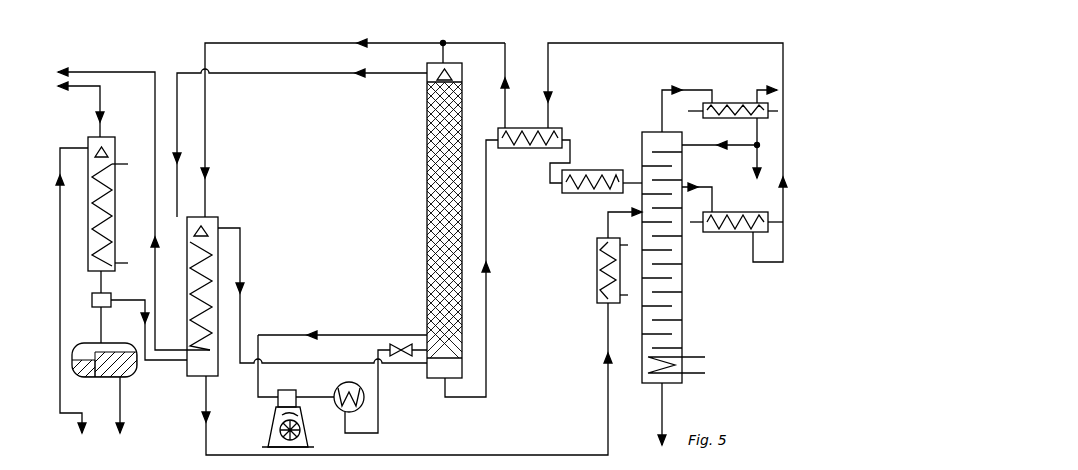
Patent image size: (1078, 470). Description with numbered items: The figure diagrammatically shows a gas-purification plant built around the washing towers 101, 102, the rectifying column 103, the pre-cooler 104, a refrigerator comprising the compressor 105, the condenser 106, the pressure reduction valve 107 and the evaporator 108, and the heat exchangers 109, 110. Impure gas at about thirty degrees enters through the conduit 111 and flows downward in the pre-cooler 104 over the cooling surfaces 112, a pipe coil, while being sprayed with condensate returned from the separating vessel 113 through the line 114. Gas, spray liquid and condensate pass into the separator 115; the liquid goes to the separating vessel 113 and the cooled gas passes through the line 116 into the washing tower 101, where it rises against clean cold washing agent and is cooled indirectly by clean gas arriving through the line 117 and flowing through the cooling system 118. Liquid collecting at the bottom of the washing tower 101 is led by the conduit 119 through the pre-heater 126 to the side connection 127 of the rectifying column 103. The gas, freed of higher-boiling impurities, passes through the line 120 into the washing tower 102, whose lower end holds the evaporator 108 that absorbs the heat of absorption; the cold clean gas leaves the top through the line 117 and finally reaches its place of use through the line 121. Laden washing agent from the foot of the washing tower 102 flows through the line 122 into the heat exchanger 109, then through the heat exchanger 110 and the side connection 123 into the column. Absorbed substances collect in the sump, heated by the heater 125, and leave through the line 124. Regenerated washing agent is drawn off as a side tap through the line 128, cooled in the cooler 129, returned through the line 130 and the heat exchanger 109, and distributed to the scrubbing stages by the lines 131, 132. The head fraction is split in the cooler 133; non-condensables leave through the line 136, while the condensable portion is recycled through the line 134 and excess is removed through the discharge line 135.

The washing tower 101 is at (190, 328).
The washing tower 102 is at (427, 139).
The rectifying column 103 is at (685, 306).
The pre-cooler 104 is at (113, 213).
The compressor 105 is at (306, 432).
The condenser 106 is at (340, 386).
The pressure reduction valve 107 is at (388, 348).
The evaporator 108 is at (452, 340).
The heat exchanger 109 is at (513, 148).
The heat exchanger 110 is at (566, 194).
The conduit 111 is at (81, 109).
The cooling surfaces 112 is at (110, 190).
The separating vessel 113 is at (122, 378).
The line 114 is at (60, 300).
The separator 115 is at (106, 295).
The line 116 is at (153, 360).
The line 117 is at (296, 76).
The cooling system 118 is at (190, 290).
The conduit 119 is at (395, 455).
The line 120 is at (242, 255).
The line 121 is at (103, 66).
The line 122 is at (488, 326).
The side connection 123 is at (634, 182).
The line 124 is at (652, 428).
The heater 125 is at (700, 360).
The pre-heater 126 is at (597, 268).
The side connection 127 is at (612, 214).
The line 128 is at (712, 190).
The cooler 129 is at (712, 233).
The line 130 is at (630, 45).
The line 131 is at (465, 38).
The line 132 is at (353, 122).
The cooler 133 is at (728, 118).
The line 134 is at (755, 140).
The discharge line 135 is at (755, 160).
The line 136 is at (757, 90).